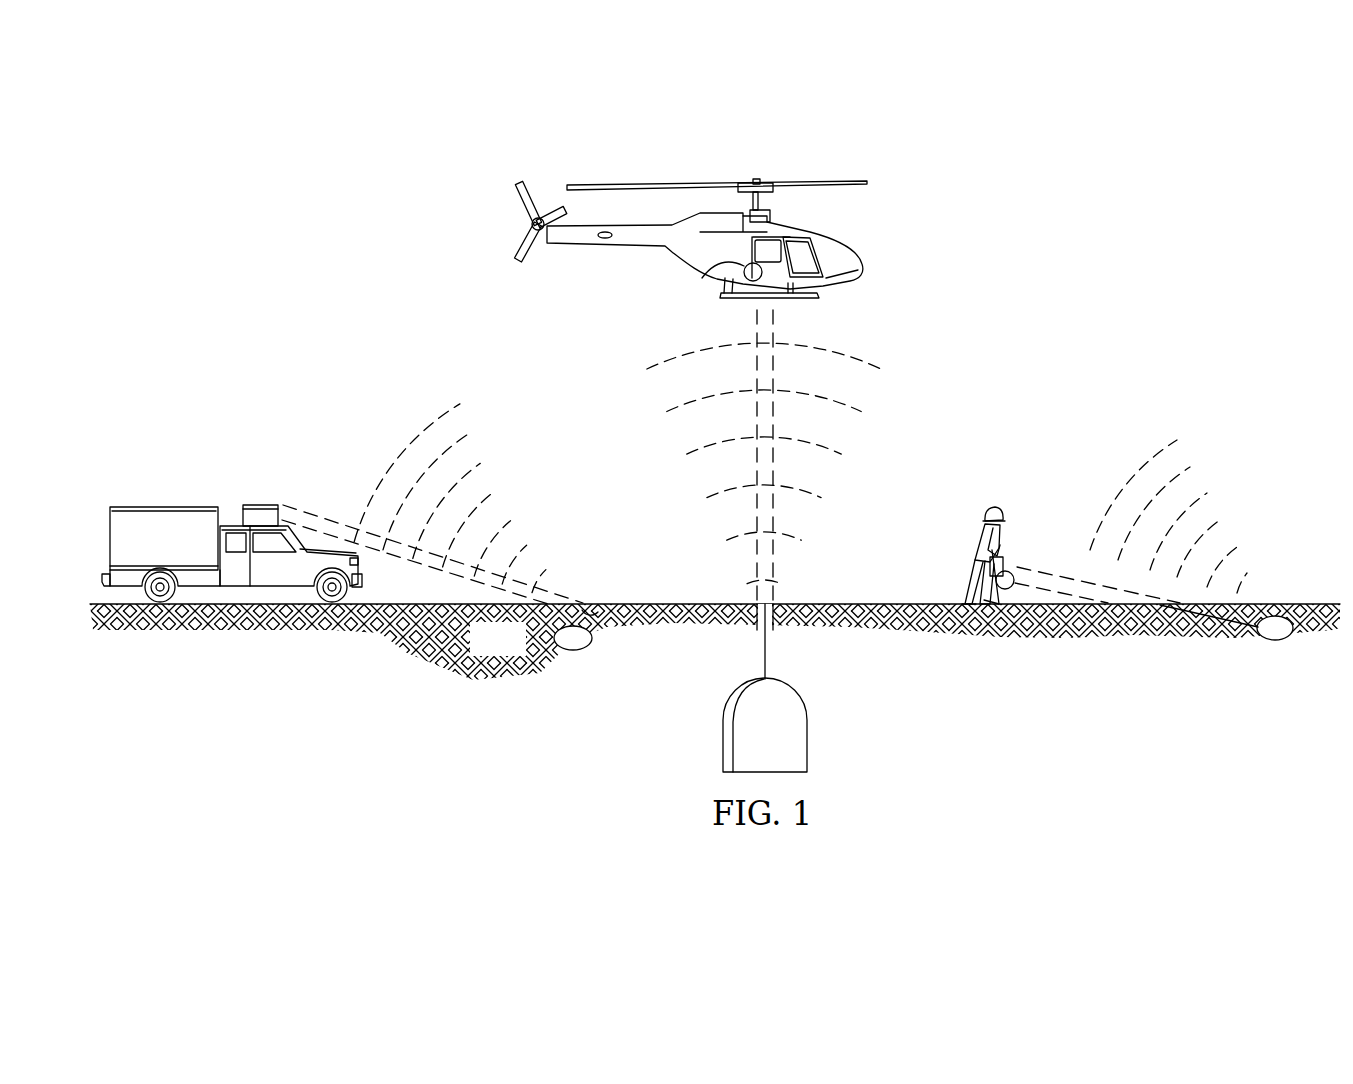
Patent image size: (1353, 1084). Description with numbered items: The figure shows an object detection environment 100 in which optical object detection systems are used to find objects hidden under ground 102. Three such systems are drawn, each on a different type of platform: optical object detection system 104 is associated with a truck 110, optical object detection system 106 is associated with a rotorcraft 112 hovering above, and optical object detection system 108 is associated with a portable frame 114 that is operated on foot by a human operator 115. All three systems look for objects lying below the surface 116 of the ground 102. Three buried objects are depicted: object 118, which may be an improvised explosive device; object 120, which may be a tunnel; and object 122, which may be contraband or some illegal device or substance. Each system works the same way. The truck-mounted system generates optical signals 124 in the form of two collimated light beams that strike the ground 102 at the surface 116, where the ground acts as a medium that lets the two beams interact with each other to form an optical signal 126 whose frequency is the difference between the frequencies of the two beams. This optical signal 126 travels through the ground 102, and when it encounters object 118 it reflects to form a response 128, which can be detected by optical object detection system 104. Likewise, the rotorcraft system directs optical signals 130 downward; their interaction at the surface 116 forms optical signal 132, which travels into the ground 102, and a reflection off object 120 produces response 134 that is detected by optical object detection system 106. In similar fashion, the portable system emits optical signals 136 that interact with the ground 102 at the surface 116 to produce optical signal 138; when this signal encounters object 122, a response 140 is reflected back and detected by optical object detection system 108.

The object detection environment 100 is at (1053, 309).
The ground 102 is at (516, 651).
The optical object detection system 104 is at (262, 505).
The optical object detection system 106 is at (714, 279).
The optical object detection system 108 is at (1005, 563).
The truck 110 is at (160, 507).
The rotorcraft 112 is at (816, 244).
The portable frame 114 is at (1006, 598).
The human operator 115 is at (982, 530).
The surface 116 is at (882, 603).
The object 118 is at (586, 650).
The object 120 is at (808, 715).
The object 122 is at (1276, 641).
The optical signals 124 is at (320, 512).
The optical signal 126 is at (605, 603).
The response 128 is at (412, 440).
The optical signals 130 is at (775, 544).
The optical signal 132 is at (767, 653).
The response 134 is at (672, 408).
The optical signals 136 is at (1040, 571).
The optical signal 138 is at (1150, 620).
The response 140 is at (1118, 492).